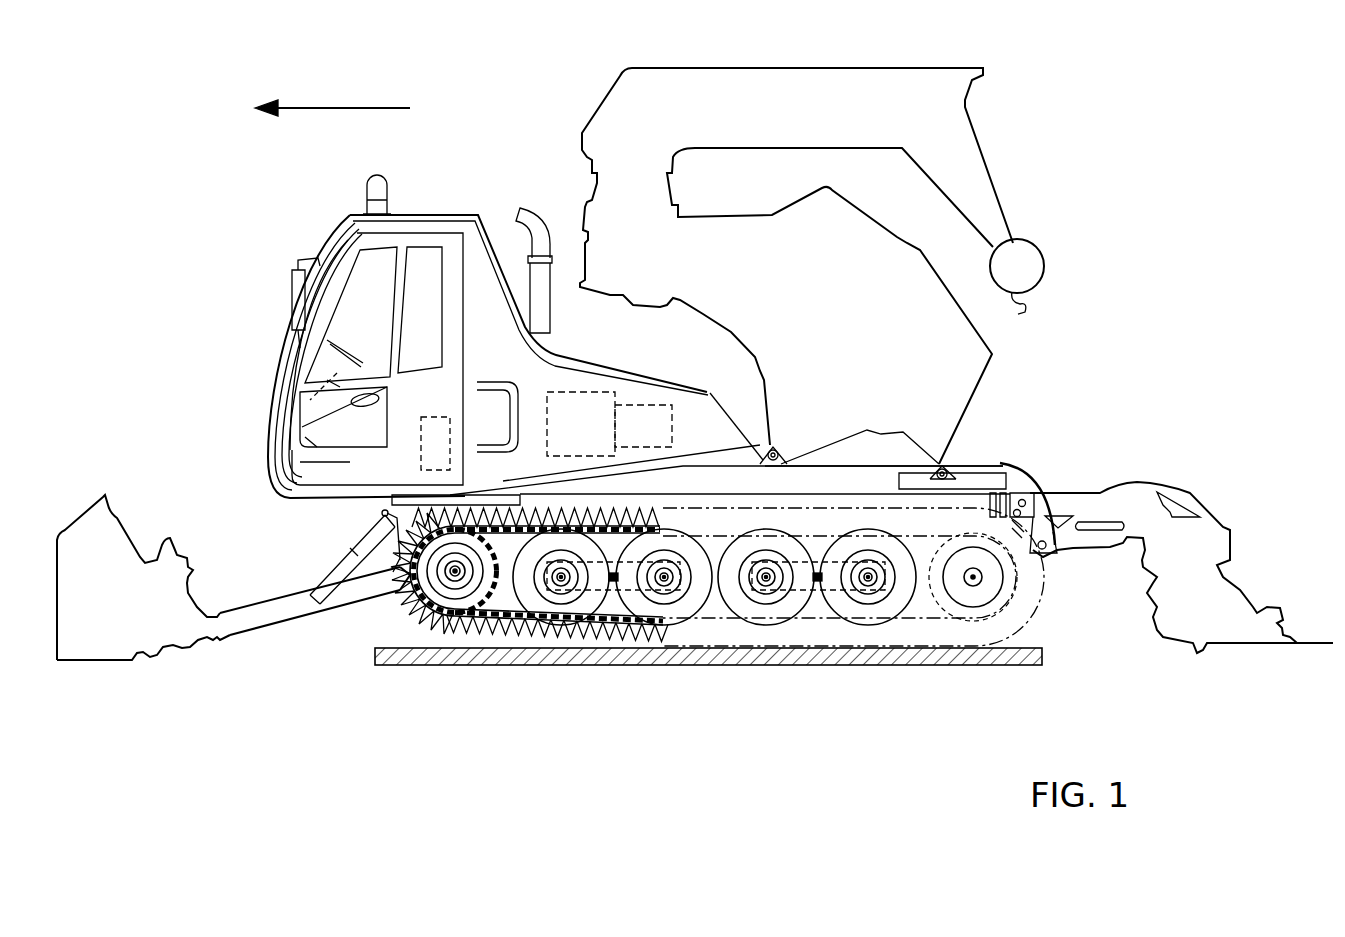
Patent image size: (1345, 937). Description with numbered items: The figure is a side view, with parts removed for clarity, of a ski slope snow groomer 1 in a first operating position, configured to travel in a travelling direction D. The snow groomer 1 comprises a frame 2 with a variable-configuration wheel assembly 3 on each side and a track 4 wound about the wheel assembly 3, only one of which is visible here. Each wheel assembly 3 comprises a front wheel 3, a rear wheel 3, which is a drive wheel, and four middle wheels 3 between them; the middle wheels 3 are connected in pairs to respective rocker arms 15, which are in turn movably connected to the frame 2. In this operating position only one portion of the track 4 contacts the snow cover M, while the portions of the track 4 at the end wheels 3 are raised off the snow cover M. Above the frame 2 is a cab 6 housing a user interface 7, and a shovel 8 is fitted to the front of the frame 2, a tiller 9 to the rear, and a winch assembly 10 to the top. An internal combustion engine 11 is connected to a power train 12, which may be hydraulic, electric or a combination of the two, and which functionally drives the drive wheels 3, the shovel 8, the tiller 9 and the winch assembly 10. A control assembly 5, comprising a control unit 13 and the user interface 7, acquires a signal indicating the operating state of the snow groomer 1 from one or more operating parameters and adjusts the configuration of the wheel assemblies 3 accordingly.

The snow groomer 1 is at (224, 222).
The frame 2 is at (1005, 464).
The wheel assembly 3 is at (480, 595).
The track 4 is at (532, 615).
The control assembly 5 is at (420, 270).
The cab 6 is at (456, 193).
The user interface 7 is at (312, 365).
The shovel 8 is at (113, 532).
The tiller 9 is at (1193, 543).
The winch assembly 10 is at (1010, 352).
The internal combustion engine 11 is at (580, 405).
The power train 12 is at (648, 415).
The control unit 13 is at (438, 430).
The rocker arm 15 is at (617, 583).
The travelling direction D is at (345, 108).
The snow cover M is at (1042, 656).